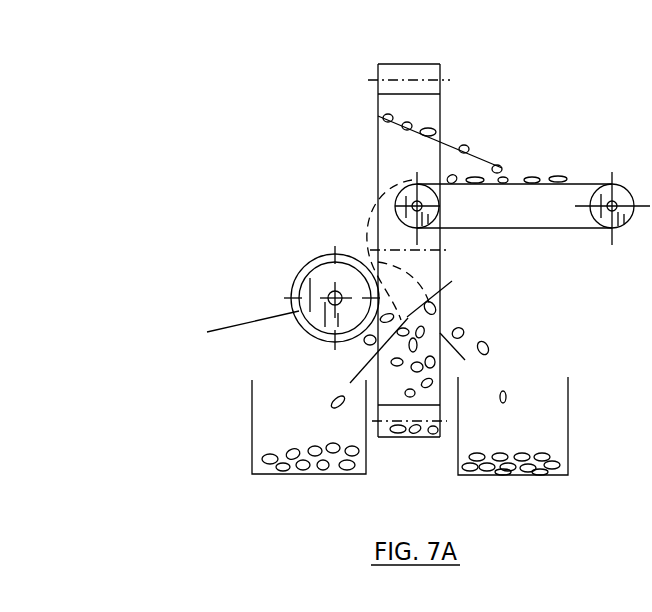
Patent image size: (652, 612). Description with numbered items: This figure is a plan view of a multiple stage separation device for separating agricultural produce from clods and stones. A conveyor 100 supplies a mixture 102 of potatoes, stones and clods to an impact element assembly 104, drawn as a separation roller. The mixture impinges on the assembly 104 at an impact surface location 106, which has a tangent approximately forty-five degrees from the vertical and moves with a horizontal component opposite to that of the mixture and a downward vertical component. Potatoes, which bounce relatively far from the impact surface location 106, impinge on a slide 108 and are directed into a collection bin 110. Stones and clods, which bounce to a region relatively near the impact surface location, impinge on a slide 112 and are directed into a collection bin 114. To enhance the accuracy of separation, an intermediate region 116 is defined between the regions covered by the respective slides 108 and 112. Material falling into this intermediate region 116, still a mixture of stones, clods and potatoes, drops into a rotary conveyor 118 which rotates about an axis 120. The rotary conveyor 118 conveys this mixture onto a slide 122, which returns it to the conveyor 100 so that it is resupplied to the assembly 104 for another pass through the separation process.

The conveyor 100 is at (601, 189).
The mixture 102 is at (507, 180).
The impact element assembly 104 is at (318, 258).
The impact surface location 106 is at (372, 222).
The slide 108 is at (440, 333).
The collection bin 110 is at (557, 391).
The slide 112 is at (360, 363).
The collection bin 114 is at (263, 413).
The intermediate region 116 is at (452, 281).
The rotary conveyor 118 is at (432, 72).
The axis 120 is at (425, 251).
The slide 122 is at (440, 145).